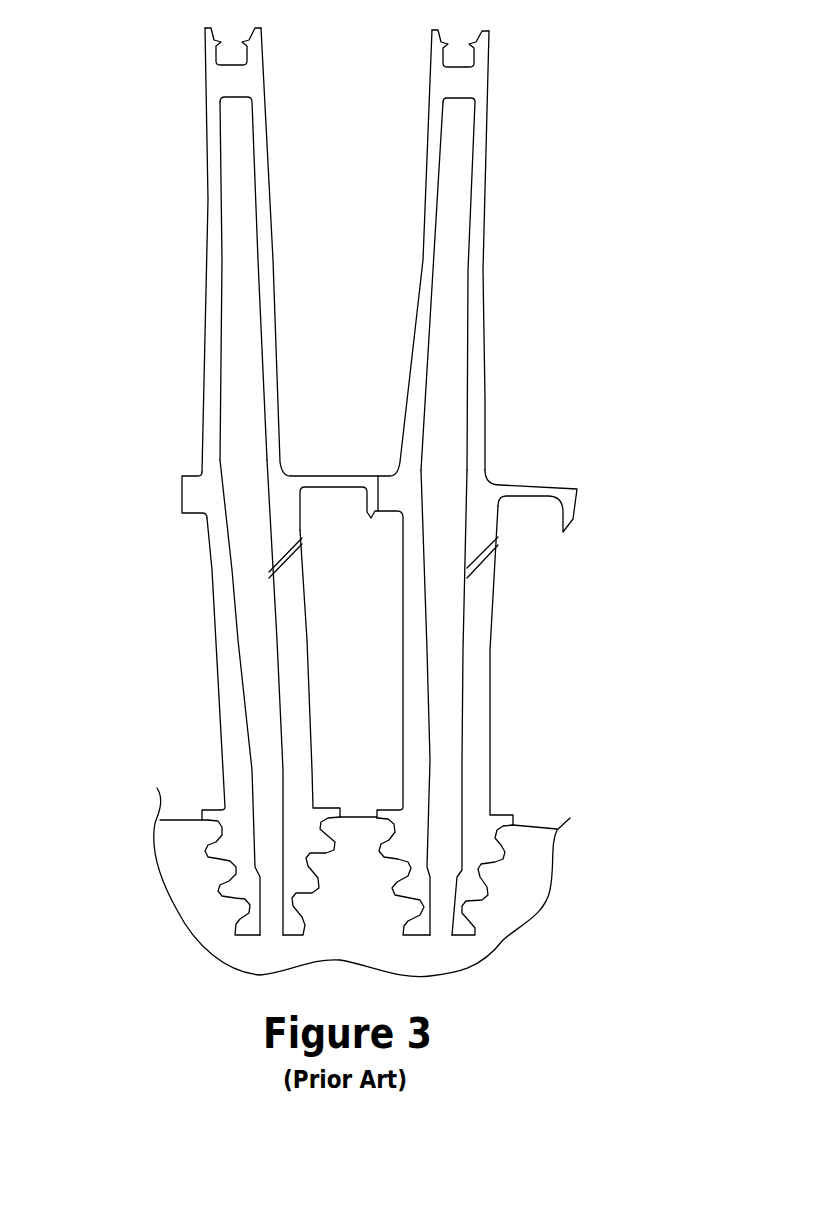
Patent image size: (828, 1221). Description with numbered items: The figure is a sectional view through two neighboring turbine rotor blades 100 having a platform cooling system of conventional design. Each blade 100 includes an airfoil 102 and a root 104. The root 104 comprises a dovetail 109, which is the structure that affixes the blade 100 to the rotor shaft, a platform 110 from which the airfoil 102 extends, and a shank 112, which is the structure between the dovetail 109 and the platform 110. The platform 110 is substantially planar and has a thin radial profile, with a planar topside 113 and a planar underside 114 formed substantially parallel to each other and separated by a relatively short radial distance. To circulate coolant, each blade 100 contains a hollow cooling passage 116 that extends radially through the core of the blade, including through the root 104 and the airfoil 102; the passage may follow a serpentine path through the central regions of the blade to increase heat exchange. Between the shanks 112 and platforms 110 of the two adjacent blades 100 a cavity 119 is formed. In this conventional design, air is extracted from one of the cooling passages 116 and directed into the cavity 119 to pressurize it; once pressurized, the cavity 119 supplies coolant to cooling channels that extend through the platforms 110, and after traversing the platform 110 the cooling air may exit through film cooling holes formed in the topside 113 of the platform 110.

The turbine rotor blade 100 is at (298, 233).
The airfoil 102 is at (203, 301).
The root 104 is at (596, 737).
The dovetail 109 is at (478, 893).
The platform 110 is at (250, 627).
The shank 112 is at (540, 648).
The topside 113 is at (366, 476).
The underside 114 is at (347, 488).
The cooling passage 116 is at (447, 433).
The cavity 119 is at (380, 651).